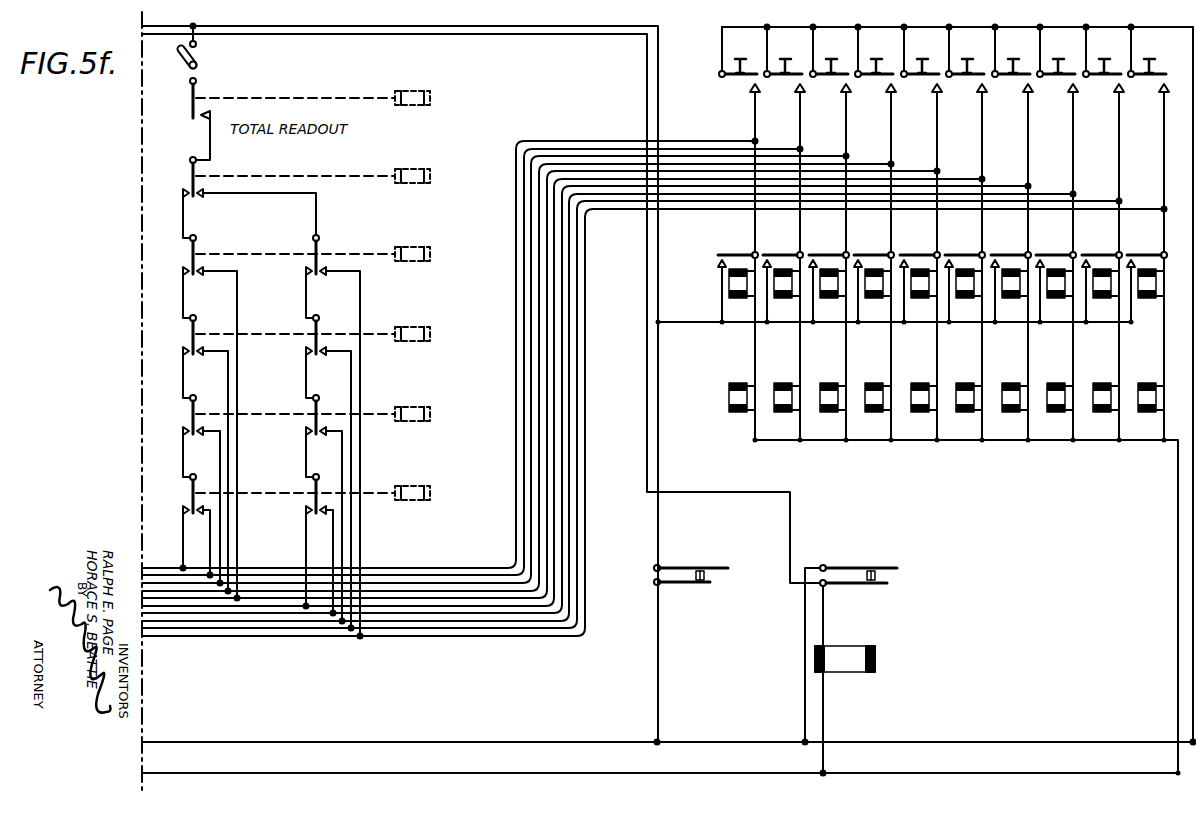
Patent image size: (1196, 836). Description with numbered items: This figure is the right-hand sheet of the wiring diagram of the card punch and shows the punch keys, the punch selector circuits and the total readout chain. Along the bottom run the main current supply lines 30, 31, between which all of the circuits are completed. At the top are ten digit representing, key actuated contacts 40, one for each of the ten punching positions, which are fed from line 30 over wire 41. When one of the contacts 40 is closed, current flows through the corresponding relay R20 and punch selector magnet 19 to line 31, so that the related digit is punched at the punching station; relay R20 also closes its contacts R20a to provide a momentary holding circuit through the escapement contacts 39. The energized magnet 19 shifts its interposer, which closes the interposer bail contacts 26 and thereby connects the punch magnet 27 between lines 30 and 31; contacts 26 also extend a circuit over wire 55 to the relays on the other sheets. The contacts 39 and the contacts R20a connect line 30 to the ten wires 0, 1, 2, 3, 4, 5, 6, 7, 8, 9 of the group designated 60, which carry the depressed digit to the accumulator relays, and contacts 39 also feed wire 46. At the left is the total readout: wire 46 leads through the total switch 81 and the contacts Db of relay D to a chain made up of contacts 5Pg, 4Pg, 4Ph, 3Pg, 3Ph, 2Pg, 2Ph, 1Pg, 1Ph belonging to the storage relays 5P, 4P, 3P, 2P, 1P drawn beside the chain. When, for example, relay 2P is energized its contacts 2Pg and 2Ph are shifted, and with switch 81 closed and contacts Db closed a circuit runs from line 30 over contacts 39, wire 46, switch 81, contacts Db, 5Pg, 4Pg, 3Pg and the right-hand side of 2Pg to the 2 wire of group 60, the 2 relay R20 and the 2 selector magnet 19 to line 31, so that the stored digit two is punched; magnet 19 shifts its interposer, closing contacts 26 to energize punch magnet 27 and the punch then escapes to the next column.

The wire 46 is at (317, 27).
The wire 55 is at (462, 34).
The total switch 81 is at (185, 60).
The contacts Db is at (202, 110).
The relay D is at (400, 90).
The contacts 5Pg is at (200, 186).
The relay 5P is at (418, 170).
The contacts 4Pg is at (198, 264).
The contacts 4Ph is at (320, 264).
The relay 4P is at (418, 248).
The contacts 3Pg is at (198, 344).
The contacts 3Ph is at (320, 344).
The relay 3P is at (412, 326).
The contacts 2Pg is at (200, 424).
The contacts 2Ph is at (322, 424).
The relay 2P is at (412, 406).
The contacts 1Pg is at (201, 500).
The contacts 1Ph is at (322, 500).
The relay 1P is at (418, 486).
The group of wires 60 is at (654, 399).
The digit 0 wire and key contacts 0 is at (488, 568).
The digit 1 wire and key contacts 1 is at (473, 575).
The digit 2 wire and key contacts 2 is at (458, 583).
The digit 3 wire and key contacts 3 is at (442, 591).
The digit 4 wire and key contacts 4 is at (425, 598).
The digit 5 wire and key contacts 5 is at (412, 606).
The digit 6 wire and key contacts 6 is at (402, 613).
The digit 7 wire and key contacts 7 is at (390, 621).
The digit 8 wire and key contacts 8 is at (380, 628).
The digit 9 wire and key contacts 9 is at (367, 636).
The key actuated contacts 40 is at (755, 80).
The contacts R20a is at (774, 252).
The relay R20 is at (735, 300).
The punch selector magnet 19 is at (733, 411).
The escapement contacts 39 is at (686, 575).
The interposer bail contacts 26 is at (880, 575).
The punch magnet 27 is at (840, 658).
The main current supply line 30 is at (940, 742).
The main current supply line 31 is at (1042, 772).
The wire 41 is at (1191, 578).